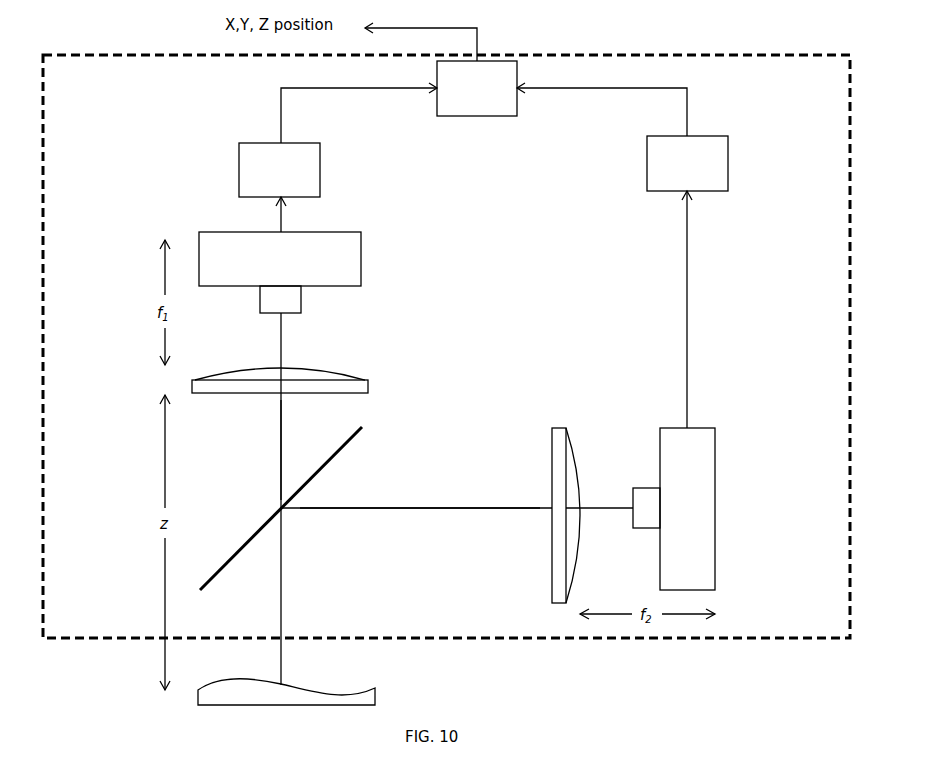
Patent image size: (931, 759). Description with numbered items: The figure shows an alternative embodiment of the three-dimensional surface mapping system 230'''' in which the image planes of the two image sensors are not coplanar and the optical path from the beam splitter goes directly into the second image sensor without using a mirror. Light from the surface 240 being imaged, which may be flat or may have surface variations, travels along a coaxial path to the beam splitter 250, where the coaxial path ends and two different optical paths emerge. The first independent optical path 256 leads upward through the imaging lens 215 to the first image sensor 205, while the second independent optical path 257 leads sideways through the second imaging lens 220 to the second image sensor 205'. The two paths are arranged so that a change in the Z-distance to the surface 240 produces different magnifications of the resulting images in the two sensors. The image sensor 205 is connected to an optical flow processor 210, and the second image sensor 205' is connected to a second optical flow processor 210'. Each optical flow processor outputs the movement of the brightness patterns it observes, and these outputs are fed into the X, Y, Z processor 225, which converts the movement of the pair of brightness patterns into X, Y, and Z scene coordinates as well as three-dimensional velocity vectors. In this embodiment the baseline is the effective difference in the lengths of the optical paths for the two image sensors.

The position detection system 230'''' is at (446, 327).
The X, Y, Z processor 225 is at (441, 69).
The optical flow processor 210 is at (338, 140).
The optical flow processor 210' is at (622, 137).
The image sensor 205 is at (280, 255).
The second image sensor 205' is at (674, 390).
The imaging lens 215 is at (192, 387).
The second imaging lens 220 is at (557, 428).
The beam splitter 250 is at (275, 515).
The first independent optical path 256 is at (281, 460).
The second independent optical path 257 is at (463, 508).
The surface 240 is at (198, 698).